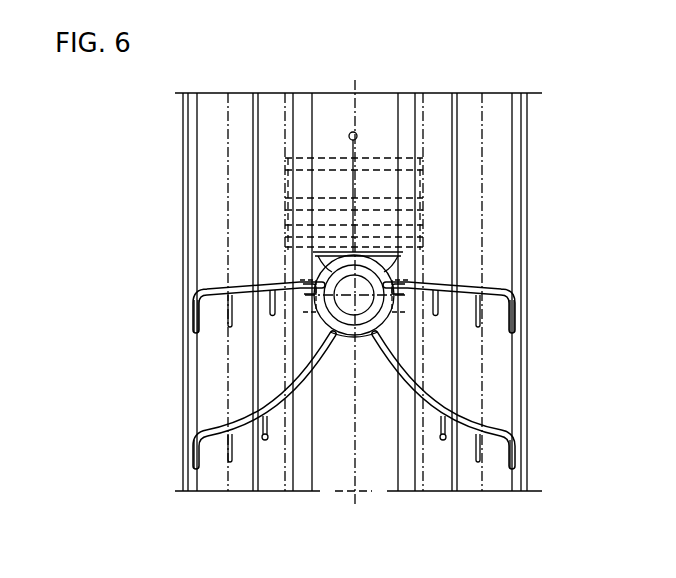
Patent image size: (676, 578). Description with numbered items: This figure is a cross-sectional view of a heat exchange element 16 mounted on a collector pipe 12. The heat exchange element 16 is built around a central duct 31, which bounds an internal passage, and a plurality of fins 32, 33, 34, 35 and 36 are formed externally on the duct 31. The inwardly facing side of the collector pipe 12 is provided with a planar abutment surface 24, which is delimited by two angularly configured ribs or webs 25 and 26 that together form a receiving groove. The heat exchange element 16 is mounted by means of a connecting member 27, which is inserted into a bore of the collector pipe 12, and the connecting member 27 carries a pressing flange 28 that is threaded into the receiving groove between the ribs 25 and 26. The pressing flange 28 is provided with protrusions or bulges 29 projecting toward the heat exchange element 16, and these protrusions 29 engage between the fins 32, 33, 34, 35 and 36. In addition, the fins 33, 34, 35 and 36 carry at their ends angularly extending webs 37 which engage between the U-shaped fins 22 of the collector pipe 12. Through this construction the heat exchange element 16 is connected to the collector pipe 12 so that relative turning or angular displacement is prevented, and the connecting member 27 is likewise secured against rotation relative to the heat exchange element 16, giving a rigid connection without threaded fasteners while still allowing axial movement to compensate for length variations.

The collector pipe 12 is at (528, 310).
The heat exchange element 16 is at (403, 256).
The U-shaped fins 22 is at (389, 316).
The planar abutment surface 24 is at (385, 472).
The angularly configured rib 25 is at (407, 477).
The angularly configured rib 26 is at (300, 478).
The connecting member 27 is at (370, 342).
The pressing flange 28 is at (408, 322).
The protrusions or bulges 29 is at (310, 318).
The duct 31 is at (300, 262).
The fin 32 is at (353, 183).
The fin 33 is at (470, 280).
The fin 34 is at (243, 283).
The fin 35 is at (468, 413).
The fin 36 is at (208, 425).
The angularly extending webs 37 is at (192, 320).